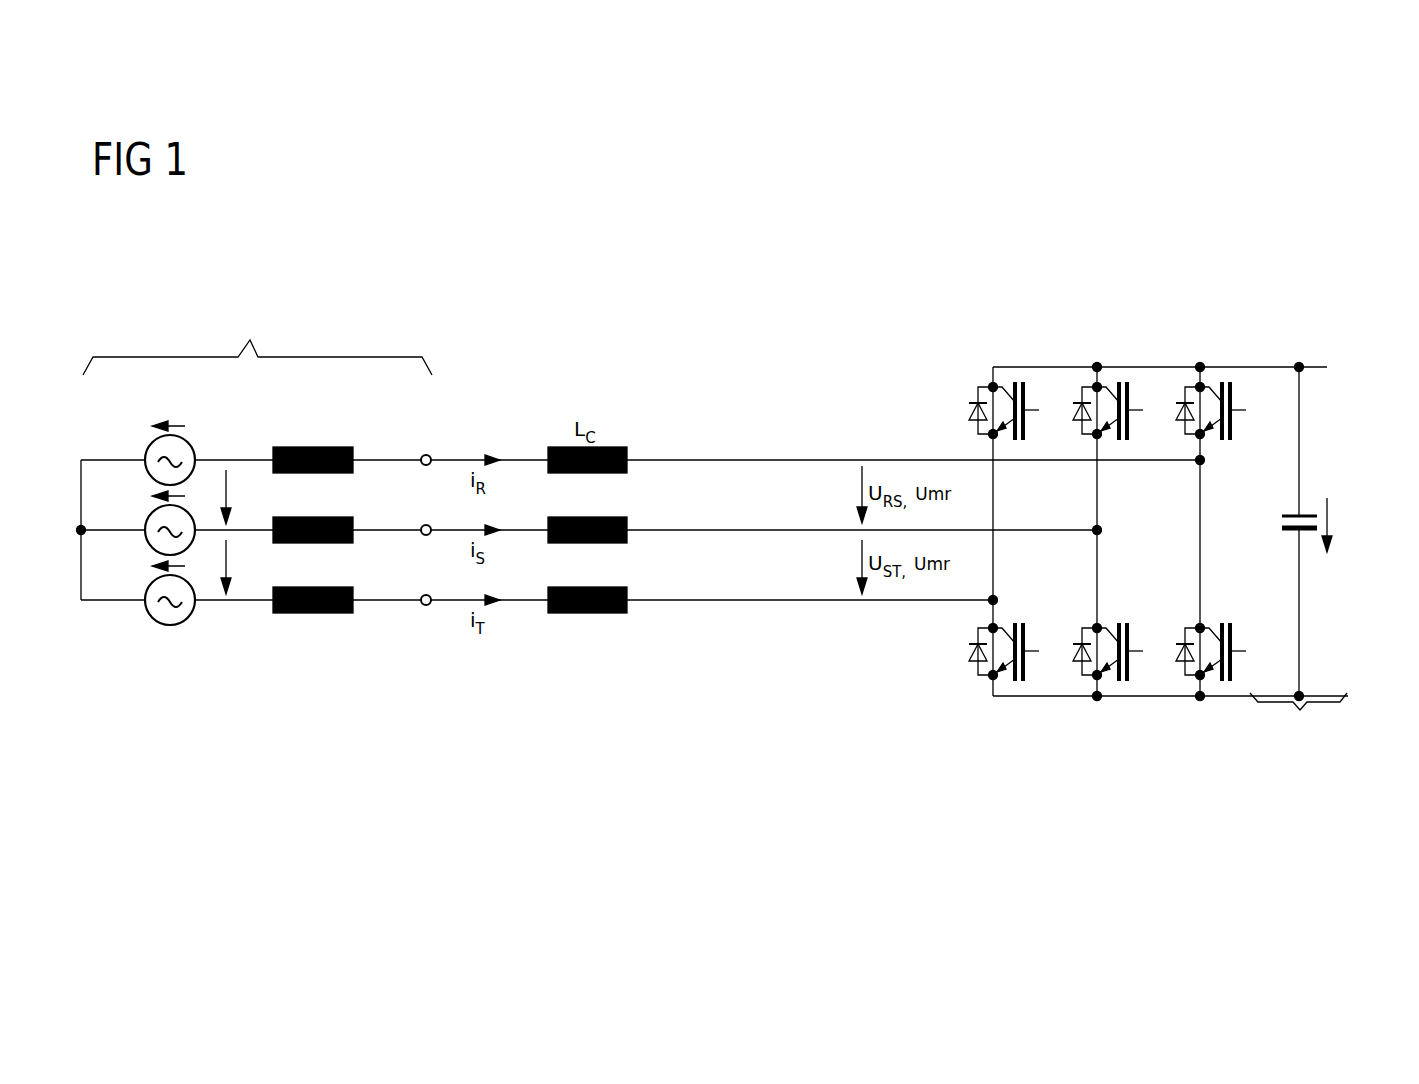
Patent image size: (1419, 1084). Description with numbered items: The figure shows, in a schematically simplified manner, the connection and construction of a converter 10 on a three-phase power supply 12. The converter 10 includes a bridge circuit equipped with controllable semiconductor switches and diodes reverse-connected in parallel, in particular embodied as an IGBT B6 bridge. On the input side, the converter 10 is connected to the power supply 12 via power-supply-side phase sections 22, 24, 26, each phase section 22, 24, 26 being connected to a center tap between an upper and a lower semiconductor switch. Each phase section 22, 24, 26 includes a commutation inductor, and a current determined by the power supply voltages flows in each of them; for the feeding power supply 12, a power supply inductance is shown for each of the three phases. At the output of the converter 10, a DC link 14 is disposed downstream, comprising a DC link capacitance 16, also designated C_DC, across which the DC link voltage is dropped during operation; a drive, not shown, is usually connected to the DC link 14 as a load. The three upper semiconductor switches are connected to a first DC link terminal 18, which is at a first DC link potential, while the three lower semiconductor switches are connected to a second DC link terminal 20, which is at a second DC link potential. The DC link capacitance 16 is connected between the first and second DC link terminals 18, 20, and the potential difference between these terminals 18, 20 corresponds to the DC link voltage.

The converter 10 is at (1000, 718).
The three-phase power supply 12 is at (250, 340).
The DC link 14 is at (1300, 710).
The DC link capacitance 16 is at (1305, 529).
The first DC link terminal 18 is at (1299, 367).
The second DC link terminal 20 is at (1300, 695).
The phase section 22 is at (693, 458).
The phase section 24 is at (798, 528).
The phase section 26 is at (731, 603).